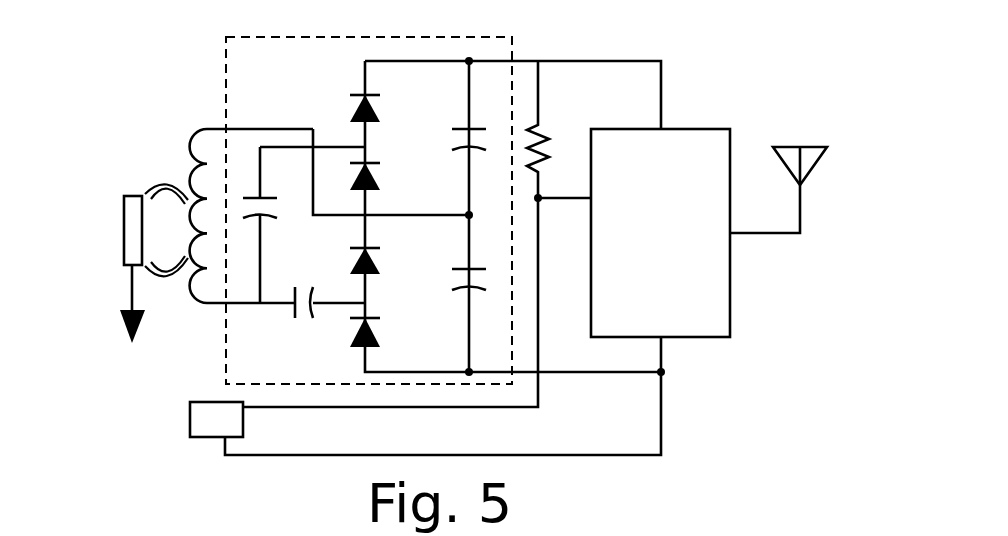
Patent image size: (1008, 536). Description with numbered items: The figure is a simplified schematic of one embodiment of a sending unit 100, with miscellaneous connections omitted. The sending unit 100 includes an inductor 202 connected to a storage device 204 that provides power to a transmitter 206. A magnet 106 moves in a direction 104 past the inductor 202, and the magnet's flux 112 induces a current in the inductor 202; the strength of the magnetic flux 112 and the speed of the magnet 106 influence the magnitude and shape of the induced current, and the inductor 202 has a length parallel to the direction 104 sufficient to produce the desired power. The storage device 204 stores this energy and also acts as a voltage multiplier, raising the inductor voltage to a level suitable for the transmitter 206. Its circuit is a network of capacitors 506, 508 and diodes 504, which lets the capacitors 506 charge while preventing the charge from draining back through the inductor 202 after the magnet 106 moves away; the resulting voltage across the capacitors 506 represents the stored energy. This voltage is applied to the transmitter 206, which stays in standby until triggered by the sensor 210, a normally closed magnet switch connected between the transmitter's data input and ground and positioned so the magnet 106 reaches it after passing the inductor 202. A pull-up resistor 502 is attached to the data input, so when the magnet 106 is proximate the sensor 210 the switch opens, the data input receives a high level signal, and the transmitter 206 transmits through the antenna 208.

The sending unit 100 is at (742, 421).
The direction 104 is at (131, 301).
The magnet 106 is at (124, 245).
The magnetic flux 112 is at (163, 183).
The inductor 202 is at (190, 143).
The storage device 204 is at (224, 55).
The transmitter 206 is at (730, 290).
The antenna 208 is at (790, 147).
The sensor 210 is at (190, 421).
The pull-up resistor 502 is at (541, 126).
The diodes 504 is at (350, 112).
The capacitors 506 is at (455, 148).
The capacitor 508 is at (294, 308).